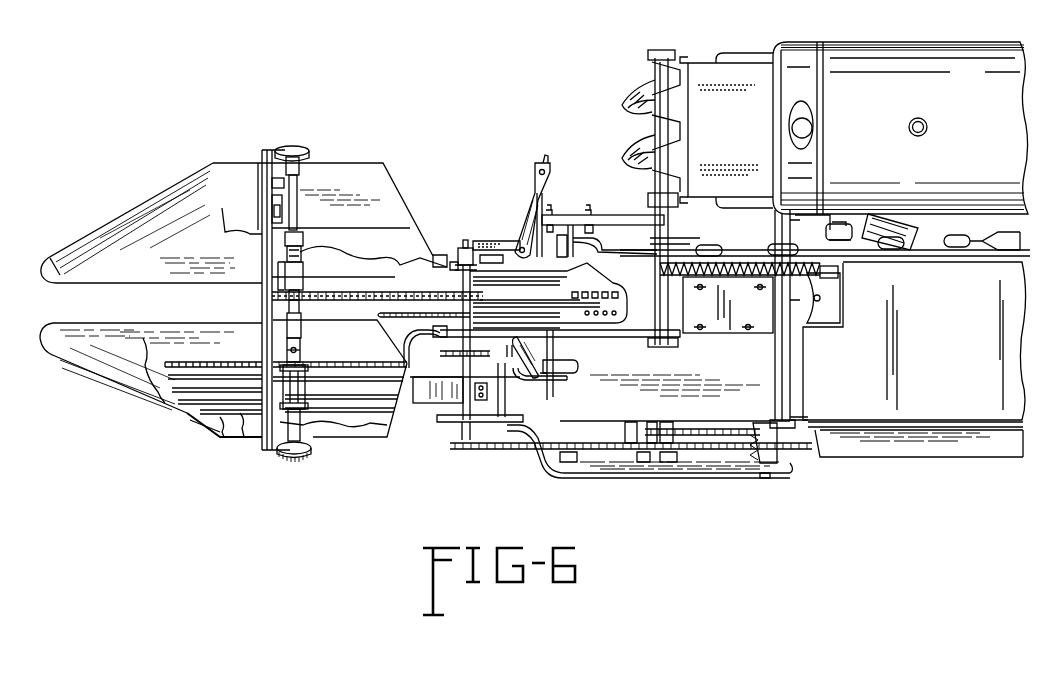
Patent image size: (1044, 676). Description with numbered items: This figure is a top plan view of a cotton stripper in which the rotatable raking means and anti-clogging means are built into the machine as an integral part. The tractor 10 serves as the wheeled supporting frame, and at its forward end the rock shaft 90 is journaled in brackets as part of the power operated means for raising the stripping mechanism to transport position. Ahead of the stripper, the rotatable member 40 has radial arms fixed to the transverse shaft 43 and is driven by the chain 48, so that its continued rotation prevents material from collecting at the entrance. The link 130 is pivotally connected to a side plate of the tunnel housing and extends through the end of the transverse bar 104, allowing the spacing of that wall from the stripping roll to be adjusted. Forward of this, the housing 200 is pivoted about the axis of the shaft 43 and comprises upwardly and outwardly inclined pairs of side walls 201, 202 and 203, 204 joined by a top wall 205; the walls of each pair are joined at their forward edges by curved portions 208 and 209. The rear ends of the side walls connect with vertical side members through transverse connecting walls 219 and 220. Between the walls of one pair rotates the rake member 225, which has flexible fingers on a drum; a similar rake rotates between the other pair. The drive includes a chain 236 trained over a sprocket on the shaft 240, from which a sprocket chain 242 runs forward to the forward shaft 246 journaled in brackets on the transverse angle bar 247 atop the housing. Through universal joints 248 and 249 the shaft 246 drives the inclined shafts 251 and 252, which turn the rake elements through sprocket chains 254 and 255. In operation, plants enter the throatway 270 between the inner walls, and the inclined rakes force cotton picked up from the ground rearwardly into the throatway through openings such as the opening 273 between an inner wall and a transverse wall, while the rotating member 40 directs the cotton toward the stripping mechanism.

The tractor 10 is at (866, 45).
The rotatable member 40 is at (402, 340).
The transverse shaft 43 is at (492, 414).
The chain 48 is at (506, 449).
The rock shaft 90 is at (668, 232).
The transverse bar 104 is at (545, 204).
The link 130 is at (535, 203).
The housing 200 is at (408, 189).
The side wall 201 is at (181, 412).
The side wall 202 is at (143, 340).
The side wall 203 is at (148, 262).
The side wall 204 is at (182, 190).
The top wall 205 is at (392, 238).
The curved portion 208 is at (80, 357).
The curved portion 209 is at (62, 257).
The transverse connecting wall 219 is at (393, 437).
The transverse connecting wall 220 is at (458, 258).
The rotating rake member 225 is at (243, 420).
The chain 236 is at (490, 358).
The shaft 240 is at (462, 279).
The sprocket chain 242 is at (329, 292).
The forward shaft 246 is at (301, 313).
The transverse angle bar 247 is at (262, 303).
The universal joint 248 is at (301, 349).
The universal joint 249 is at (300, 250).
The inclined shaft 251 is at (305, 430).
The inclined shaft 252 is at (272, 186).
The sprocket chain 254 is at (297, 458).
The sprocket chain 255 is at (296, 142).
The throatway 270 is at (42, 314).
The opening 273 is at (472, 252).